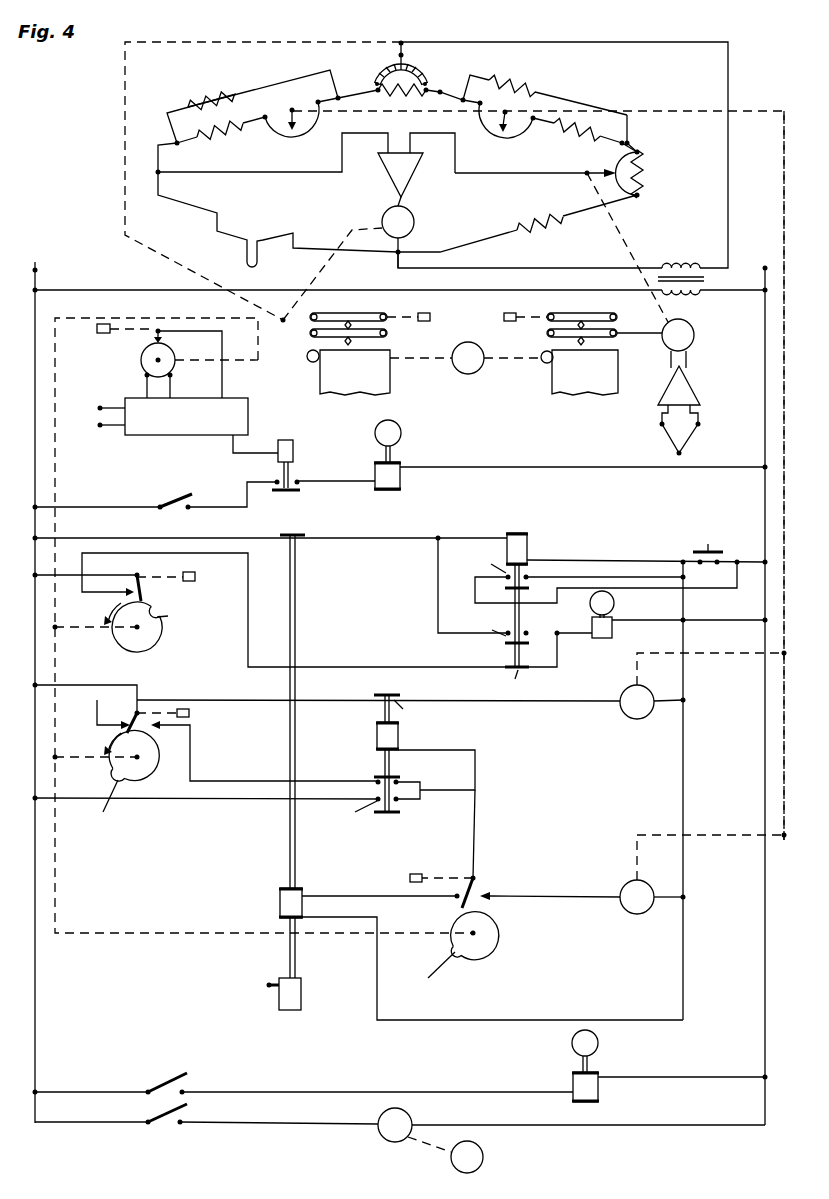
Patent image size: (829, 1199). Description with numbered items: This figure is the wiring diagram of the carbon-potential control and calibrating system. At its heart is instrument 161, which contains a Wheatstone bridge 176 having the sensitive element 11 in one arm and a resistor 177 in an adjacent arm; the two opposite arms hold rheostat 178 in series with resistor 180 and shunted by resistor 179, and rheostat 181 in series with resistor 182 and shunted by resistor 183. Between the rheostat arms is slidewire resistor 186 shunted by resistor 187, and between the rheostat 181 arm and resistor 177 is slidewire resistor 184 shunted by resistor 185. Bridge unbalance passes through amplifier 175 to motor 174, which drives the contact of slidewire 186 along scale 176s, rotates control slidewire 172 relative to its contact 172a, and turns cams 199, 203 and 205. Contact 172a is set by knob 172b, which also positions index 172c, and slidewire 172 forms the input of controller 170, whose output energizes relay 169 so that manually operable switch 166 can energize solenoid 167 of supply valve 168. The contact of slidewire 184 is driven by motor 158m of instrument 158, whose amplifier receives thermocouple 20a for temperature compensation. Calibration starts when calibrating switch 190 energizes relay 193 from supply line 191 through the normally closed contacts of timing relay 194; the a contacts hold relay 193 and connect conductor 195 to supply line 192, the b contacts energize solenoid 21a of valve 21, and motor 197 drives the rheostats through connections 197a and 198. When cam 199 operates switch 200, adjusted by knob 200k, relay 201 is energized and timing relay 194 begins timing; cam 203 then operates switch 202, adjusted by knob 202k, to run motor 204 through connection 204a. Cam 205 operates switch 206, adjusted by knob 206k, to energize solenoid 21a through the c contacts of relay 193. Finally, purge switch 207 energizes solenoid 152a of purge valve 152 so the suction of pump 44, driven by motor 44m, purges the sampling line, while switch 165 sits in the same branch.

The sensitive element 11 is at (240, 256).
The thermocouple 20a is at (665, 437).
The valve 21 is at (615, 603).
The solenoid 21a is at (593, 637).
The pump 44 is at (484, 1153).
The pump motor 44m is at (384, 1136).
The purge valve 152 is at (600, 1044).
The solenoid 152a is at (603, 1087).
The instrument 158 is at (750, 386).
The motor 158m is at (689, 328).
The instrument 161 is at (290, 361).
The switch 165 is at (163, 1120).
The manually operable switch 166 is at (174, 503).
The solenoid 167 is at (392, 478).
The supply valve 168 is at (402, 434).
The relay 169 is at (291, 450).
The controller 170 is at (243, 416).
The control slidewire 172 is at (142, 362).
The contact 172a is at (162, 334).
The knob 172b is at (98, 333).
The index 172c is at (348, 318).
The motor 174 is at (415, 221).
The amplifier 175 is at (384, 168).
The Wheatstone bridge 176 is at (683, 92).
The scale 176s is at (407, 50).
The resistor 177 is at (549, 228).
The rheostat 178 is at (302, 130).
The resistor 179 is at (204, 99).
The resistor 180 is at (217, 133).
The rheostat 181 is at (482, 128).
The resistor 182 is at (578, 128).
The resistor 183 is at (530, 88).
The slidewire resistor 184 is at (628, 162).
The resistor 185 is at (643, 172).
The slidewire resistor 186 is at (428, 80).
The resistor 187 is at (400, 97).
The calibrating switch 190 is at (703, 567).
The supply line 191 is at (35, 473).
The supply line 192 is at (765, 486).
The relay 193 is at (526, 550).
The timing relay 194 is at (284, 905).
The conductor 195 is at (683, 776).
The motor 197 is at (628, 688).
The broken-line connection 197a is at (729, 655).
The connection 198 is at (784, 525).
The notched cam 199 is at (153, 758).
The switch 200 is at (139, 698).
The knob 200k is at (189, 713).
The relay 201 is at (385, 738).
The cam operated switch 202 is at (476, 888).
The knob 202k is at (418, 873).
The cam 203 is at (498, 940).
The motor 204 is at (635, 914).
The mechanical connection 204a is at (713, 838).
The cam 205 is at (131, 640).
The switch 206 is at (143, 598).
The knob 206k is at (190, 571).
The purge switch 207 is at (163, 1080).